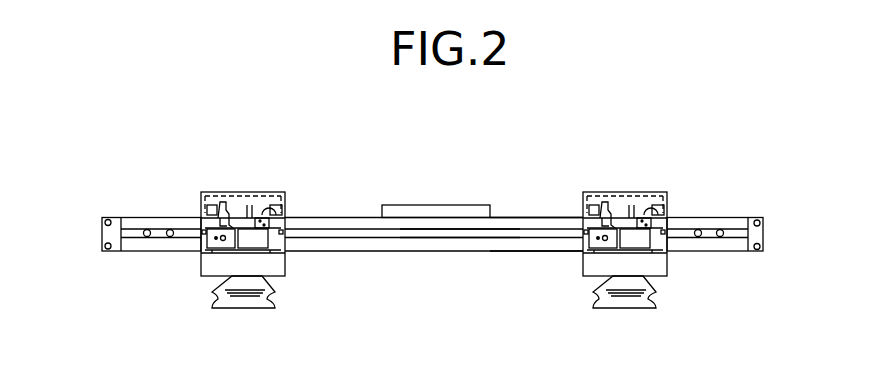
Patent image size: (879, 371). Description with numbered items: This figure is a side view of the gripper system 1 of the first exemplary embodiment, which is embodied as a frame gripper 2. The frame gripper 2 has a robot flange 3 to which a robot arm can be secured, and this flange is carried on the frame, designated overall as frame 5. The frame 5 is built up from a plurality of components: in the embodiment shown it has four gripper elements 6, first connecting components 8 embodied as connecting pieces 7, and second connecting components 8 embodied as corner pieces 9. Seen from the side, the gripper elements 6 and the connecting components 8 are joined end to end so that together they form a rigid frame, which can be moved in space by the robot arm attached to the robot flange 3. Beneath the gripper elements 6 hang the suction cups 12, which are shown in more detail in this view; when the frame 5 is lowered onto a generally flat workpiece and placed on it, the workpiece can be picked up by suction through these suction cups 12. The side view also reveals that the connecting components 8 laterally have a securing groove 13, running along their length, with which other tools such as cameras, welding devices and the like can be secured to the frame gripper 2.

The gripper system 1 is at (88, 296).
The frame gripper 2 is at (323, 204).
The robot flange 3 is at (448, 205).
The frame 5 is at (530, 217).
The gripper element 6 is at (228, 192).
The connecting piece 7 is at (360, 217).
The connecting component 8 is at (428, 188).
The corner piece 9 is at (137, 217).
The suction cup 12 is at (275, 290).
The securing groove 13 is at (458, 229).